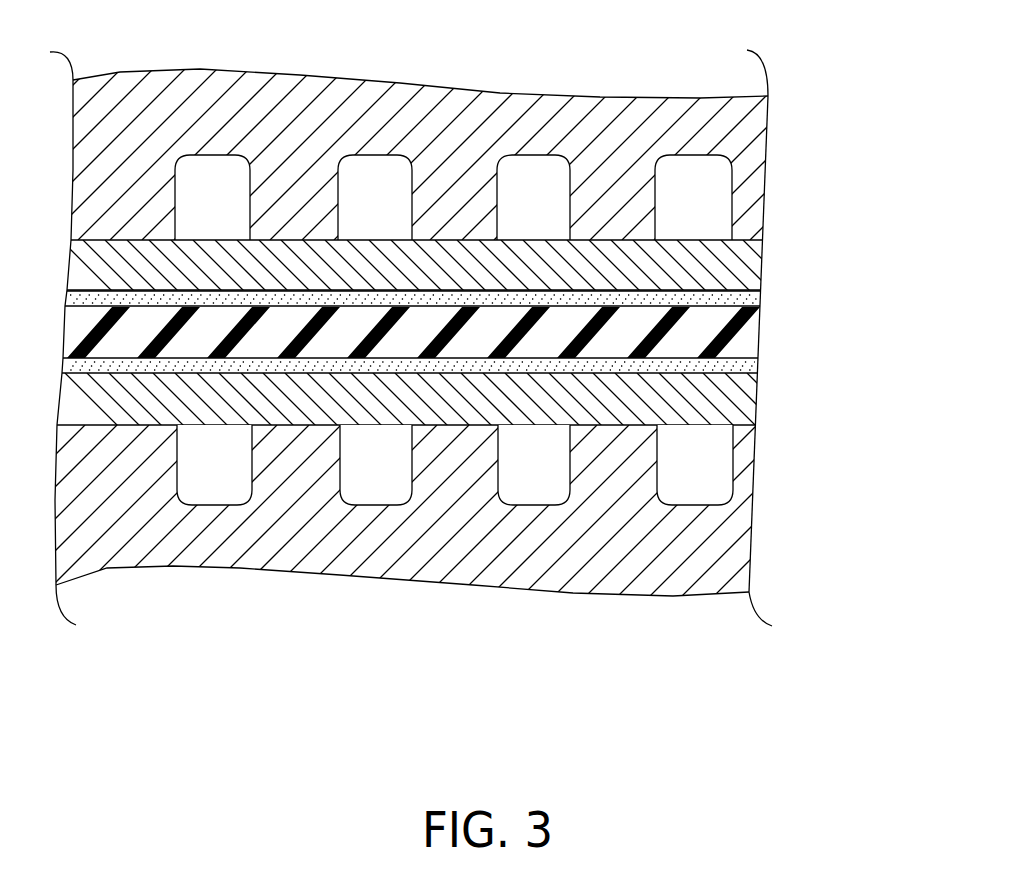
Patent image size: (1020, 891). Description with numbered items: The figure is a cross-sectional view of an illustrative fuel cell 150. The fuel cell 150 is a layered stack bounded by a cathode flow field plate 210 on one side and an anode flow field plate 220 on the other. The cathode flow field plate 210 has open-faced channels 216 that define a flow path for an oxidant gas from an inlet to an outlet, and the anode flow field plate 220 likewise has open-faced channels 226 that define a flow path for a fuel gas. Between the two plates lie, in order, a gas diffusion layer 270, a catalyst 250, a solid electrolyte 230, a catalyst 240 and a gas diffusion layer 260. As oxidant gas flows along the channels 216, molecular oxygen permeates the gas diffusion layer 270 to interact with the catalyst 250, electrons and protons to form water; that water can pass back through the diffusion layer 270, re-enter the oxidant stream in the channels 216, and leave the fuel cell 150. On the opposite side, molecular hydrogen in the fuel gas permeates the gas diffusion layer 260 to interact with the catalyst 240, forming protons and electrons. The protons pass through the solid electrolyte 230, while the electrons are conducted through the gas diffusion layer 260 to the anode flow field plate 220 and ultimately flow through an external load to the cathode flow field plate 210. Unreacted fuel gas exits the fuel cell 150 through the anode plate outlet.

The fuel cell 150 is at (720, 672).
The cathode flow field plate 210 is at (453, 148).
The open-faced channels 216 is at (376, 141).
The anode flow field plate 220 is at (487, 520).
The open-faced channels 226 is at (371, 534).
The gas diffusion layer 270 is at (740, 265).
The catalyst 250 is at (752, 297).
The solid electrolyte 230 is at (740, 340).
The catalyst 240 is at (745, 362).
The gas diffusion layer 260 is at (737, 388).